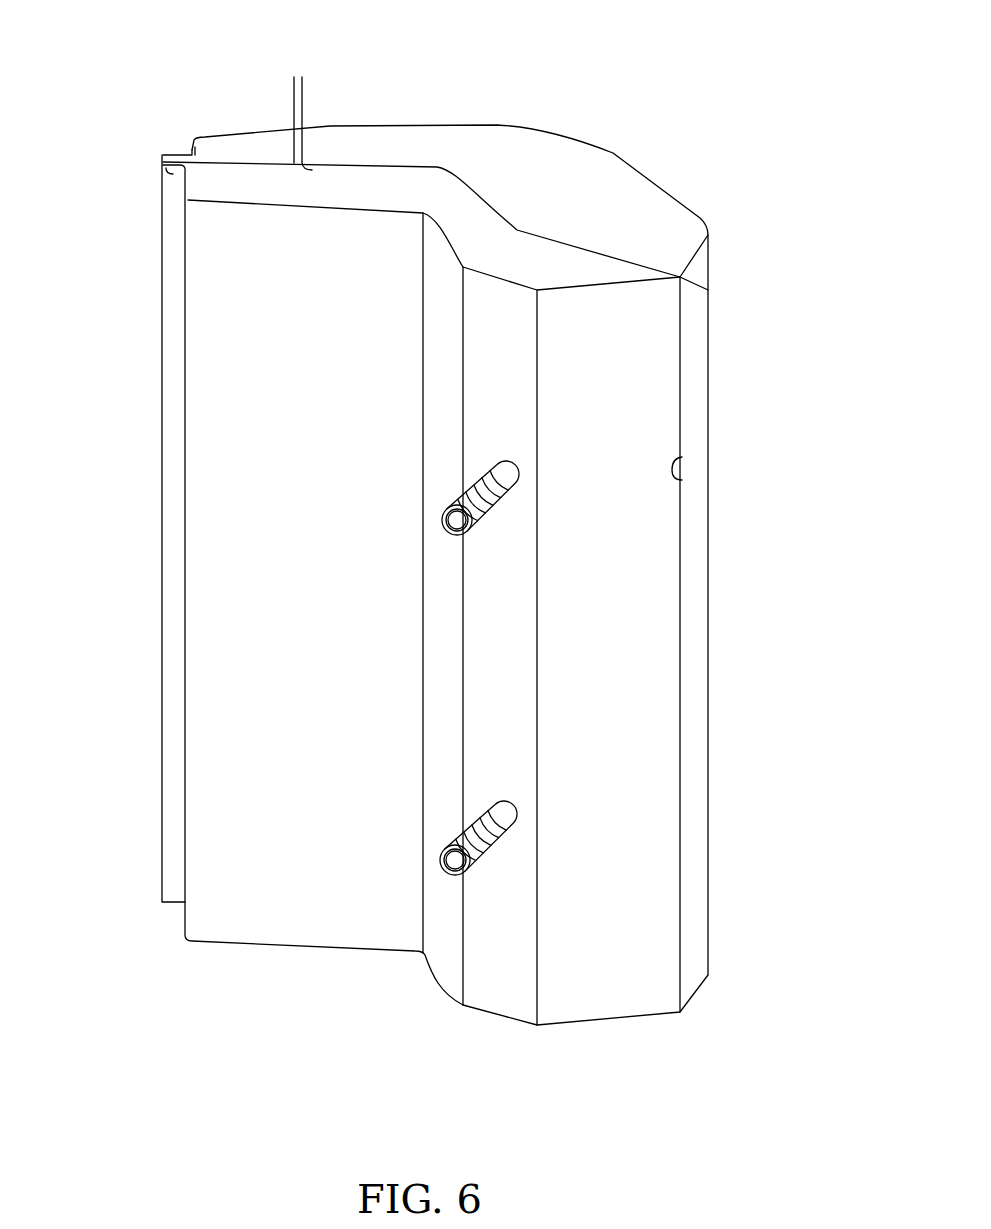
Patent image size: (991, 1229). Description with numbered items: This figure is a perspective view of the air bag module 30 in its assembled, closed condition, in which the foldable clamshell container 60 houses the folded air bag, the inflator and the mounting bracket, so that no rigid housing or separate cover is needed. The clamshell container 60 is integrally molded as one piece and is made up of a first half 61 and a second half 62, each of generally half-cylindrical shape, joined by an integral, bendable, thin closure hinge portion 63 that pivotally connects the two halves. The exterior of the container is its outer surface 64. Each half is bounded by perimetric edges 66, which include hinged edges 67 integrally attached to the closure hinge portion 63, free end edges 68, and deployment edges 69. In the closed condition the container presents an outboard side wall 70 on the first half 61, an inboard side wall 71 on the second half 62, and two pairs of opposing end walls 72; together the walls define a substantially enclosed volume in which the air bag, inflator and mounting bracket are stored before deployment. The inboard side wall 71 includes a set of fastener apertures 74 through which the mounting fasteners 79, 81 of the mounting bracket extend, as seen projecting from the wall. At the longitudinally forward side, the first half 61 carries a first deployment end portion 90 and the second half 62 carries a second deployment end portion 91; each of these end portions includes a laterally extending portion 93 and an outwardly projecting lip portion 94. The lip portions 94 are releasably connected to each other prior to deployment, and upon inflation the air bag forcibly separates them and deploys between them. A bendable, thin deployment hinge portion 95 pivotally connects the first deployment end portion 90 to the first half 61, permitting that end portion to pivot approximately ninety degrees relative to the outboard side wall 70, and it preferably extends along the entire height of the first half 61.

The air bag module 30 is at (573, 137).
The clamshell container 60 is at (675, 188).
The first half 61 is at (542, 130).
The second half 62 is at (623, 285).
The closure hinge portion 63 is at (710, 290).
The outer surface 64 is at (648, 672).
The perimetric edges 66 is at (375, 182).
The hinged edges 67 is at (682, 432).
The free end edges 68 is at (296, 109).
The deployment edges 69 is at (163, 155).
The outboard side wall 70 is at (613, 153).
The inboard side wall 71 is at (647, 553).
The end walls 72 is at (463, 208).
The fastener apertures 74 is at (490, 470).
The mounting fastener 79 is at (450, 858).
The mounting fastener 81 is at (450, 517).
The first deployment end portion 90 is at (157, 148).
The second deployment end portion 91 is at (184, 202).
The laterally extending portion 93 is at (184, 148).
The lip portion 94 is at (158, 146).
The deployment hinge portion 95 is at (188, 147).